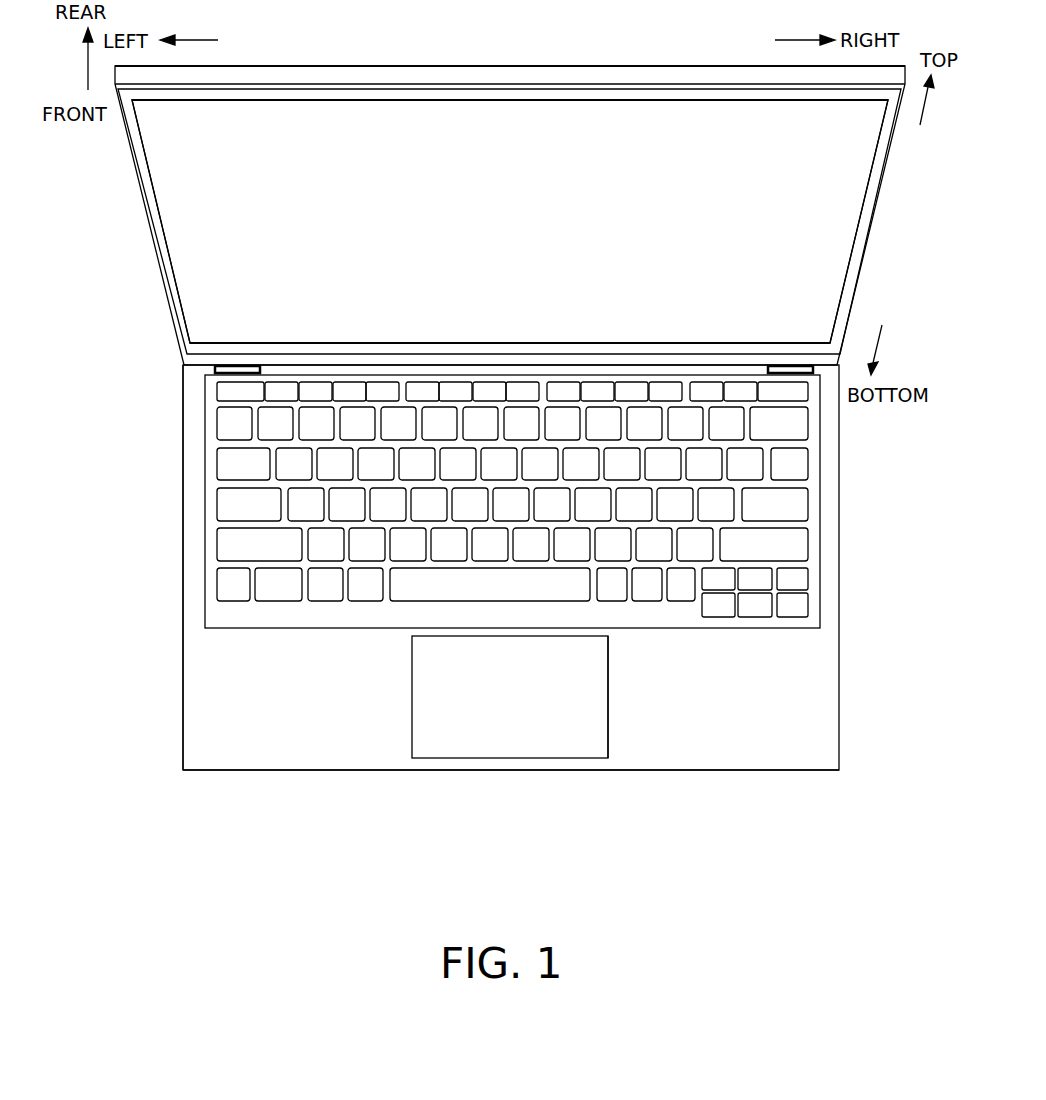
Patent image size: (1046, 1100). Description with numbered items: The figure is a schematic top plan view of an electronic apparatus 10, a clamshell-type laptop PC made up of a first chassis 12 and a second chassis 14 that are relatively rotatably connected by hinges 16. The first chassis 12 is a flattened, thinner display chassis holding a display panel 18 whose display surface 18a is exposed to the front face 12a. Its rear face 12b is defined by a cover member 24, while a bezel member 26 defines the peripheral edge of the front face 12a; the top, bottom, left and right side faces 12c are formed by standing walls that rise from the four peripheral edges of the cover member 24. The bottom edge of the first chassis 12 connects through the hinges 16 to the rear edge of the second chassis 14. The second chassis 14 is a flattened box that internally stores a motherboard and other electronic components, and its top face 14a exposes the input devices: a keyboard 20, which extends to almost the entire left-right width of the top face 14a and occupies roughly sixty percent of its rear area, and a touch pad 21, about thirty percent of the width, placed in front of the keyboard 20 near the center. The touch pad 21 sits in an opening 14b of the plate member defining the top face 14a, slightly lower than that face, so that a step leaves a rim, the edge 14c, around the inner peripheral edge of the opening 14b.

The electronic apparatus 10 is at (91, 202).
The first chassis 12 is at (889, 193).
The front face 12a is at (265, 125).
The rear face 12b is at (448, 66).
The side faces 12c is at (162, 266).
The second chassis 14 is at (862, 531).
The top face 14a is at (203, 682).
The opening 14b is at (412, 698).
The edge 14c is at (607, 698).
The hinges 16 is at (237, 370).
The display panel 18 is at (696, 126).
The display surface 18a is at (618, 143).
The keyboard 20 is at (650, 628).
The touch pad 21 is at (493, 737).
The cover member 24 is at (448, 66).
The bezel member 26 is at (536, 98).